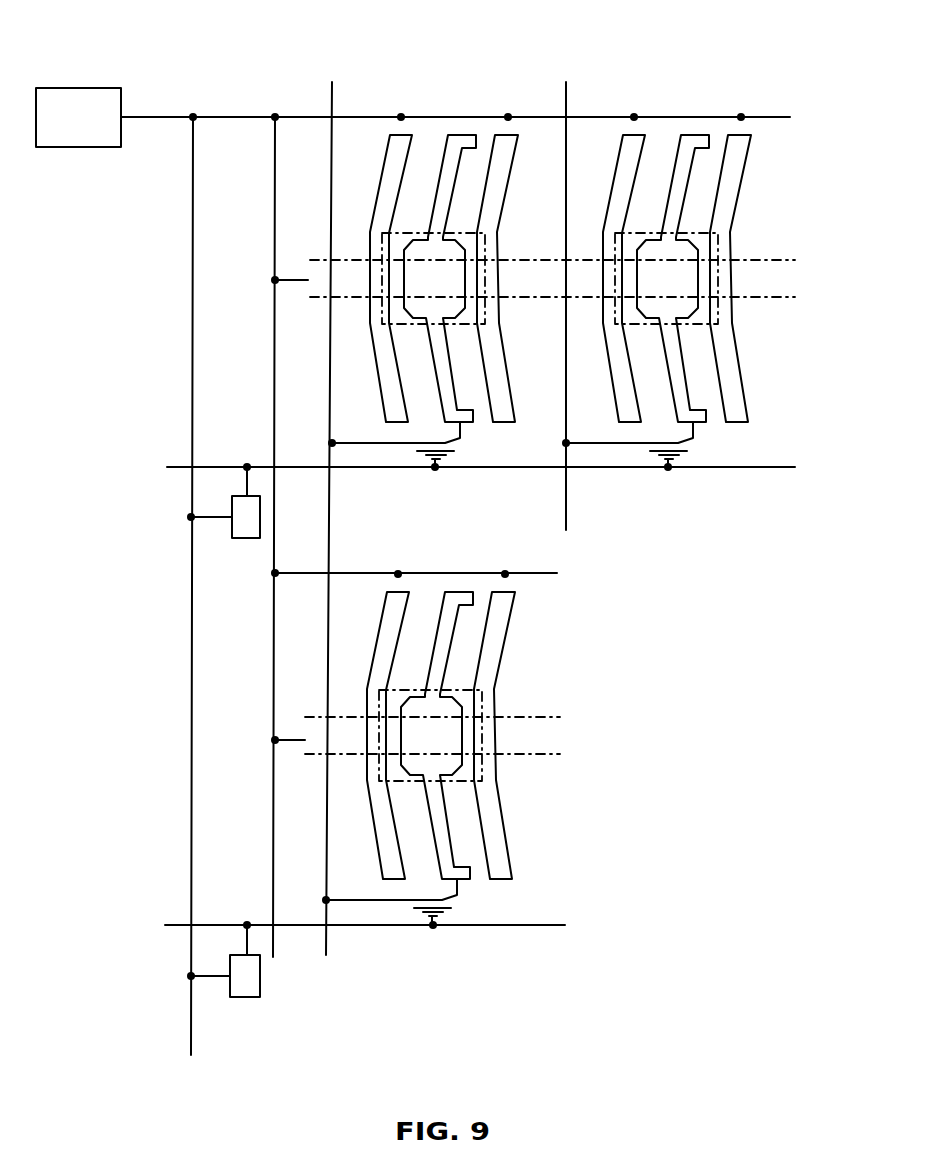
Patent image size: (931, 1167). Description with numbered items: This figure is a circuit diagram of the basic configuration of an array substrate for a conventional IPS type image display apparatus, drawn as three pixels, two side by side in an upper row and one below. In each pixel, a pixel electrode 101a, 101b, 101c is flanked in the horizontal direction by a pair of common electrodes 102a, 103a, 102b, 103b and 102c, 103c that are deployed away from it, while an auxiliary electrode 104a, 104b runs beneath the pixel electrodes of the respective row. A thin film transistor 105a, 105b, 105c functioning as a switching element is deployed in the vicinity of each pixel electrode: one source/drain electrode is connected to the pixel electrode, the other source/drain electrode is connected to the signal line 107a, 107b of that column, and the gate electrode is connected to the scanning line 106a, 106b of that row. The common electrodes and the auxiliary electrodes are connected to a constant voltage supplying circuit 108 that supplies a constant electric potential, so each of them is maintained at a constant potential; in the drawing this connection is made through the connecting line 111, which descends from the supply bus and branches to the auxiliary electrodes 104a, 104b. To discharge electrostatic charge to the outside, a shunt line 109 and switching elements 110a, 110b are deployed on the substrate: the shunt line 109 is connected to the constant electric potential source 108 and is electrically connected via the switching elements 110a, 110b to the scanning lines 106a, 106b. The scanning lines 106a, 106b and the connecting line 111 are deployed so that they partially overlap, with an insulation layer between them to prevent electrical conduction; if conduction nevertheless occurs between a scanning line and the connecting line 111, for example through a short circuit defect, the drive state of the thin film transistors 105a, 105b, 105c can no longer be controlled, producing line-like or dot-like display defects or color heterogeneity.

The pixel electrode 101a is at (462, 132).
The pixel electrode 101b is at (683, 224).
The pixel electrode 101c is at (440, 694).
The common electrode 102a is at (397, 132).
The common electrode 102b is at (628, 229).
The common electrode 102c is at (374, 694).
The common electrode 103a is at (513, 132).
The common electrode 103b is at (755, 229).
The common electrode 103c is at (513, 694).
The auxiliary electrode 104a is at (532, 300).
The auxiliary electrode 104b is at (439, 750).
The thin film transistor 105a is at (452, 457).
The thin film transistor 105b is at (670, 464).
The thin film transistor 105c is at (433, 926).
The scanning line 106a is at (167, 470).
The scanning line 106b is at (165, 927).
The signal line 107a is at (332, 100).
The signal line 107b is at (567, 100).
The constant voltage supplying circuit 108 is at (86, 88).
The shunt line 109 is at (193, 200).
The switching element 110a is at (240, 540).
The switching element 110b is at (241, 999).
The connecting line 111 is at (275, 355).